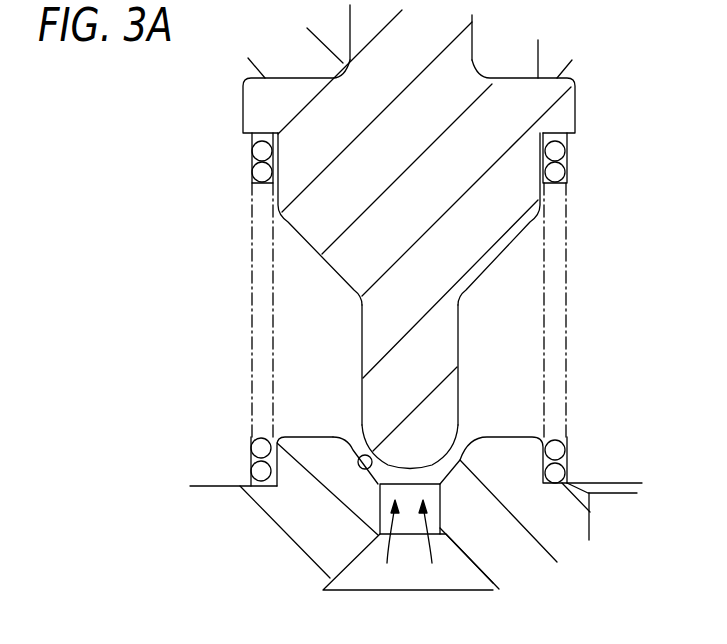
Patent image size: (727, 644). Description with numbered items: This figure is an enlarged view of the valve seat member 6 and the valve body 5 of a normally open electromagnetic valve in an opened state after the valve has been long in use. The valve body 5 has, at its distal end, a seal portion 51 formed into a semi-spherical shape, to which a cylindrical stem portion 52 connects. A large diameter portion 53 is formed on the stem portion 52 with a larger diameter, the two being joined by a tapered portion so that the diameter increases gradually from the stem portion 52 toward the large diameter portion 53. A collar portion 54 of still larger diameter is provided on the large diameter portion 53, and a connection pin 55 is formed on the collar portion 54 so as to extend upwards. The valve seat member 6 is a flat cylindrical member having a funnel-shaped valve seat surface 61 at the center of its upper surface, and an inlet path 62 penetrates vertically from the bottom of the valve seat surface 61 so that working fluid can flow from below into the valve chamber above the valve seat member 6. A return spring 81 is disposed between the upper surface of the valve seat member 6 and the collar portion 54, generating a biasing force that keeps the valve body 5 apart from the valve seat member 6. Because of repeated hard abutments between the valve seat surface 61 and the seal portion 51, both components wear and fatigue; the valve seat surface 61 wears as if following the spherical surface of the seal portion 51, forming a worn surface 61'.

The valve body 5 is at (460, 236).
The seal portion 51 is at (462, 440).
The stem portion 52 is at (442, 353).
The large diameter portion 53 is at (508, 195).
The collar portion 54 is at (558, 117).
The connection pin 55 is at (460, 42).
The valve seat member 6 is at (419, 507).
The valve seat surface 61 is at (286, 432).
The worn surface 61' is at (288, 514).
The inlet path 62 is at (445, 573).
The return spring 81 is at (567, 310).